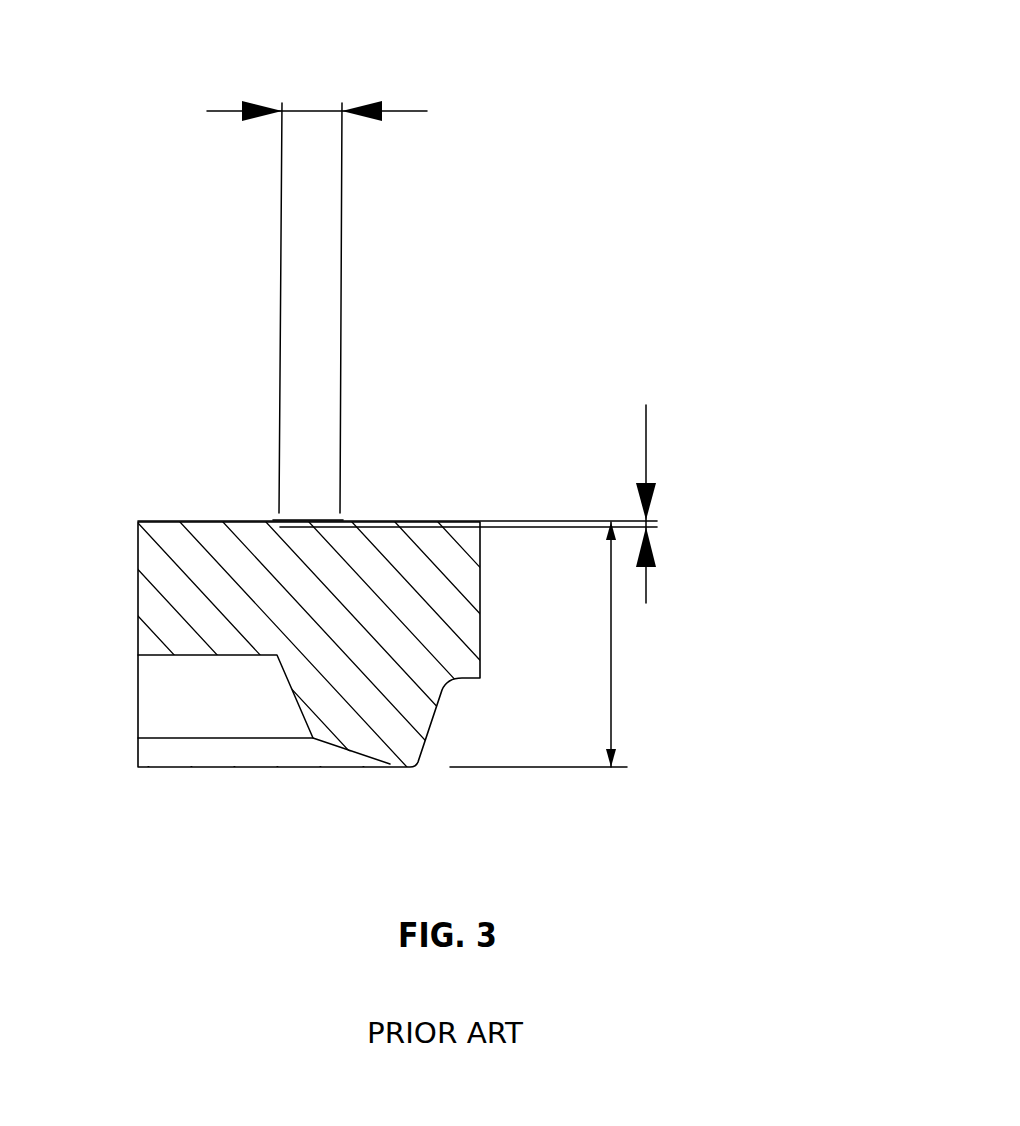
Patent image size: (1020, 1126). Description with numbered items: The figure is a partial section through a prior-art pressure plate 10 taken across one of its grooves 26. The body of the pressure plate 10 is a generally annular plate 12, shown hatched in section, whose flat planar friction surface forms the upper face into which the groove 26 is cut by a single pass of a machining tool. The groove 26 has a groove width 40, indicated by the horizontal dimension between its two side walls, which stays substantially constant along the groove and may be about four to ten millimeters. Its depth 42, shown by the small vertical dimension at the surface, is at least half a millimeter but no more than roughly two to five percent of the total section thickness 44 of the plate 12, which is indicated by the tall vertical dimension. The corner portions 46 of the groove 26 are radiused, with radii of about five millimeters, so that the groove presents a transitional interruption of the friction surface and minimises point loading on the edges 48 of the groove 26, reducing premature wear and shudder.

The pressure plate 10 is at (535, 330).
The annular plate 12 is at (482, 674).
The groove 26 is at (310, 520).
The groove width 40 is at (400, 107).
The depth 42 is at (646, 452).
The total section thickness 44 is at (611, 655).
The corner portion 46 is at (268, 528).
The edge 48 is at (266, 508).